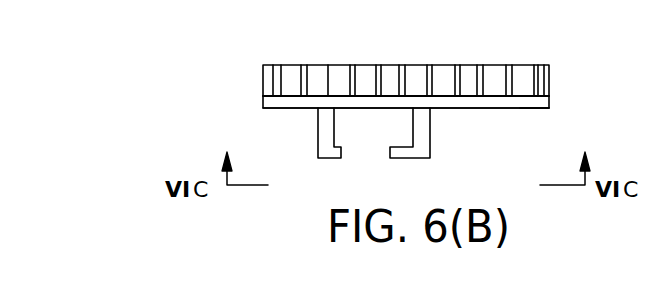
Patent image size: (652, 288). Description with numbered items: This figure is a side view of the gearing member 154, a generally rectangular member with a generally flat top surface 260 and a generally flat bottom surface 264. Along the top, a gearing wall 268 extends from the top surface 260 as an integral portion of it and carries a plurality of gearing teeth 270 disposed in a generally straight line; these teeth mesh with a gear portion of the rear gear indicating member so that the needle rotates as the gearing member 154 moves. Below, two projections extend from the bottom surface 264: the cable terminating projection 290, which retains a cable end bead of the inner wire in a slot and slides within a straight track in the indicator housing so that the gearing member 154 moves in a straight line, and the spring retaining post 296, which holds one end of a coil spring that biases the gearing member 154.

The top surface 260 is at (543, 65).
The bottom surface 264 is at (499, 109).
The gearing wall 268 is at (326, 65).
The gearing teeth 270 is at (422, 65).
The cable terminating projection 290 is at (417, 152).
The spring retaining post 296 is at (331, 153).
The gearing member 154 is at (536, 120).